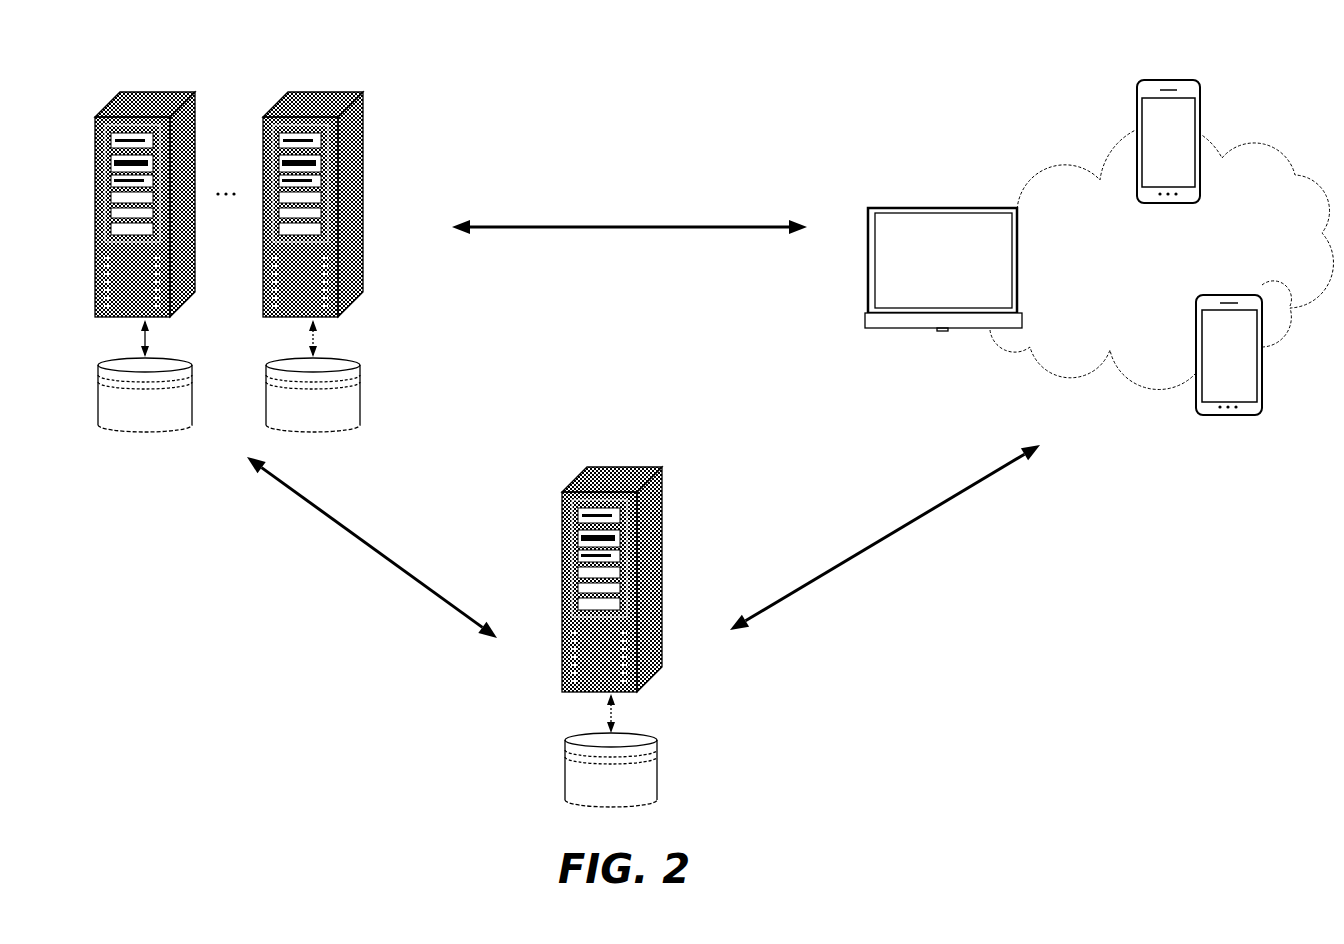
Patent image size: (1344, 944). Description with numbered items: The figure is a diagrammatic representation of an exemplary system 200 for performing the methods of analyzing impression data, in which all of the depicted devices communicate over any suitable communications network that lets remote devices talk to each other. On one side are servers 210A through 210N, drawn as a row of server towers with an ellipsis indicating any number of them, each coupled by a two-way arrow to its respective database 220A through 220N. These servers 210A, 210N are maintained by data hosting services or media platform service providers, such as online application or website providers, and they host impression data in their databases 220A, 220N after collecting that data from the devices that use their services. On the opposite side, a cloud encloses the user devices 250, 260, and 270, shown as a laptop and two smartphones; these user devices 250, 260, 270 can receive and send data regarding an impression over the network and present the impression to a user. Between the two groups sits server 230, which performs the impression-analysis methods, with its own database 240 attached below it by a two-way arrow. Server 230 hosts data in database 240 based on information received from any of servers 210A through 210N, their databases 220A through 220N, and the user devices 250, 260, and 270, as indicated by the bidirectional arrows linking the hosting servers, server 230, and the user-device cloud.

The system 200 is at (197, 730).
The server 210A is at (152, 84).
The server 210N is at (320, 84).
The database 220A is at (117, 421).
The database 220N is at (285, 421).
The server 230 is at (618, 460).
The database 240 is at (590, 797).
The user device 250 is at (942, 202).
The user device 260 is at (1168, 74).
The user device 270 is at (1230, 420).